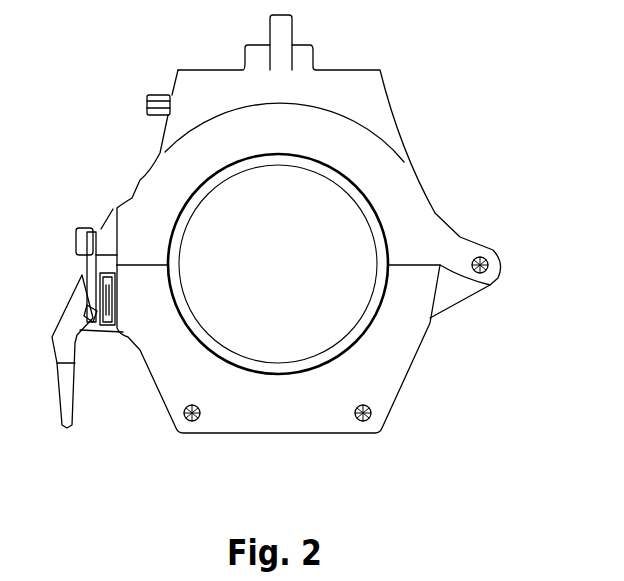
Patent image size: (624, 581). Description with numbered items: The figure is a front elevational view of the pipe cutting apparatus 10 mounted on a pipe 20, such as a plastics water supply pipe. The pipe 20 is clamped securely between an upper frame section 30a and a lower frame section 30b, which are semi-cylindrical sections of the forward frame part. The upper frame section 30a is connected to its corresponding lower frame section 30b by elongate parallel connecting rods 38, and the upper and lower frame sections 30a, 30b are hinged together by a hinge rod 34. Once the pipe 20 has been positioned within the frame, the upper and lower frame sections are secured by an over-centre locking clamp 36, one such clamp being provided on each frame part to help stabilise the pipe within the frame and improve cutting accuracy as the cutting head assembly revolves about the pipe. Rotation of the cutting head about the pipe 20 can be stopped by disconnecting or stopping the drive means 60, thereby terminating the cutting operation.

The pipe cutting apparatus 10 is at (427, 423).
The pipe 20 is at (235, 173).
The upper frame section 30a is at (413, 227).
The lower frame section 30b is at (408, 307).
The hinge rod 34 is at (490, 273).
The over-centre locking clamp 36 is at (75, 333).
The connecting rods 38 is at (197, 422).
The drive means 60 is at (148, 95).